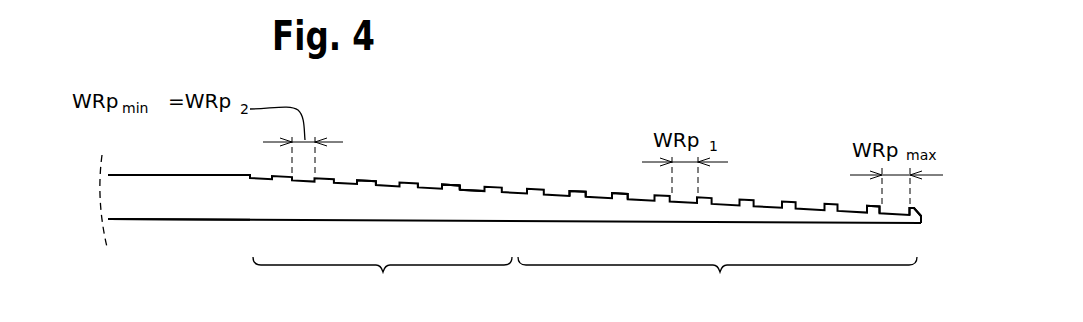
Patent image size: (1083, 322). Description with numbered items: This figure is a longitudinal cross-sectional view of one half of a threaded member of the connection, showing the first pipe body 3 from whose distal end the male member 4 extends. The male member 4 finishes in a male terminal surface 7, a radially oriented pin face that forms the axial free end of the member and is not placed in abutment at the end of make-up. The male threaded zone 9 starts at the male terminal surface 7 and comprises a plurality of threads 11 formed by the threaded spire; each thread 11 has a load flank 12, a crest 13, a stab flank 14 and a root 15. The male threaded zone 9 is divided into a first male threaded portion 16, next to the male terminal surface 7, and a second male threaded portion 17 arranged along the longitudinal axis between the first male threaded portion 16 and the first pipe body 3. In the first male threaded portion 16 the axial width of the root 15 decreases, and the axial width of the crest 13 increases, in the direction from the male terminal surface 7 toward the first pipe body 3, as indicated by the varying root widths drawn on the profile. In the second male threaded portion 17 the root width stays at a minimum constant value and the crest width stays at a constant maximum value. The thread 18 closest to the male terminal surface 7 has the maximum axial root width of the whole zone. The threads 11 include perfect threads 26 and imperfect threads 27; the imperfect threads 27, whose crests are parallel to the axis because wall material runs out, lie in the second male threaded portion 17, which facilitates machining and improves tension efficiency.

The first pipe body 3 is at (157, 202).
The male member 4 is at (430, 220).
The male terminal surface 7 is at (923, 218).
The male threaded zone 9 is at (580, 187).
The thread 11 is at (453, 190).
The load flank 12 is at (438, 186).
The crest 13 is at (448, 182).
The stab flank 14 is at (467, 180).
The root 15 is at (481, 187).
The first male threaded portion 16 is at (717, 279).
The second male threaded portion 17 is at (382, 279).
The thread closest to the male terminal surface 18 is at (866, 194).
The perfect thread 26 is at (620, 190).
The imperfect thread 27 is at (368, 178).